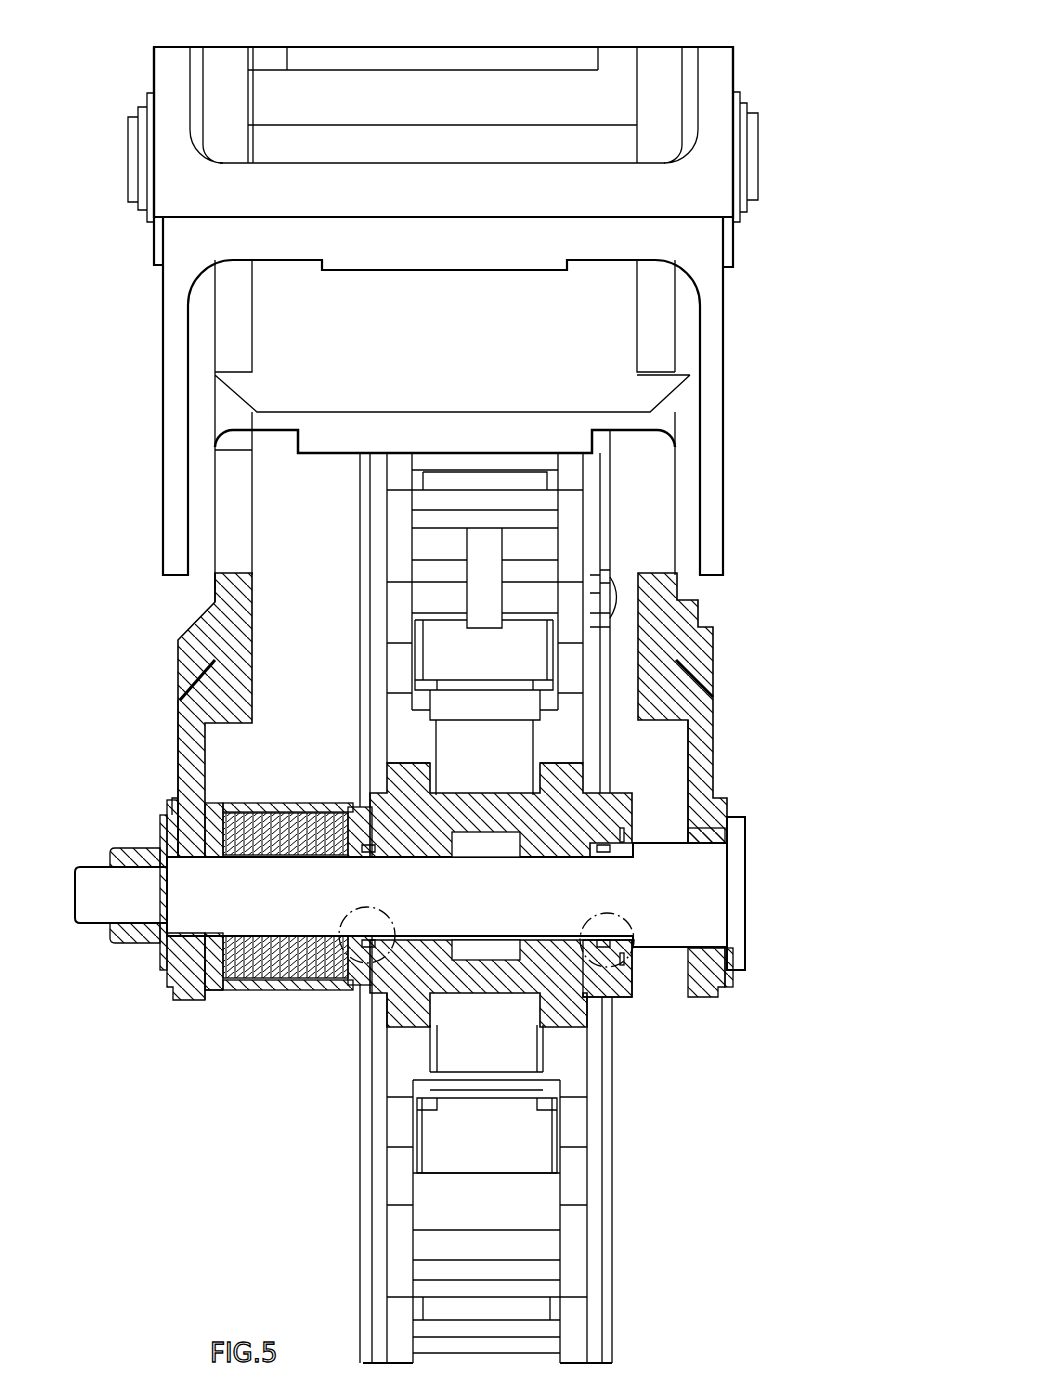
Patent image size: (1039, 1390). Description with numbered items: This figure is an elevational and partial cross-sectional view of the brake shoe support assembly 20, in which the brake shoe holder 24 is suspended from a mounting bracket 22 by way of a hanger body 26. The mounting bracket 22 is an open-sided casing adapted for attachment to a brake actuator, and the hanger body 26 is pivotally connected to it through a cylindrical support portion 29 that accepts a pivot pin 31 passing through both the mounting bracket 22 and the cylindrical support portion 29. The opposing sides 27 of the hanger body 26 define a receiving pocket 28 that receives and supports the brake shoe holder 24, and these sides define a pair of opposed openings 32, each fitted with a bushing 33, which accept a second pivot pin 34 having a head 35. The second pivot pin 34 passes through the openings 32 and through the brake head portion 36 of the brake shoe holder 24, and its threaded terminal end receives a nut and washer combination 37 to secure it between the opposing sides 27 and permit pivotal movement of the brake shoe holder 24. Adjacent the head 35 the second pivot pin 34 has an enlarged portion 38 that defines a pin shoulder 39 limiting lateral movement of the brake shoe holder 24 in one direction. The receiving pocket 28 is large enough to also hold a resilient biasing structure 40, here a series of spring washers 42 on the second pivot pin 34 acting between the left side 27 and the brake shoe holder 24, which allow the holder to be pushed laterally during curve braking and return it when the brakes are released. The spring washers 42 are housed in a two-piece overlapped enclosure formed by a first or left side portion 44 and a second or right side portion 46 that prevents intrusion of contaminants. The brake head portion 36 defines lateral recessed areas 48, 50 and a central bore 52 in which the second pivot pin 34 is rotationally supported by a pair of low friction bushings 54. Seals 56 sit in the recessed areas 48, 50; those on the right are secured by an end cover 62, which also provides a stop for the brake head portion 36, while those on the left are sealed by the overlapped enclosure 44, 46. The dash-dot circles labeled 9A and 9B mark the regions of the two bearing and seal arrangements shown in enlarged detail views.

The brake shoe support assembly 20 is at (90, 127).
The mounting bracket 22 is at (735, 90).
The brake shoe holder 24 is at (612, 1245).
The hanger body 26 is at (713, 670).
The opposing sides 27 is at (187, 760).
The receiving pocket 28 is at (690, 740).
The cylindrical support portion 29 is at (652, 60).
The pivot pin 31 is at (757, 165).
The opposed openings 32 is at (160, 966).
The bushing 33 is at (185, 845).
The second pivot pin 34 is at (745, 895).
The head 35 is at (735, 858).
The brake head portion 36 is at (440, 945).
The nut and washer combination 37 is at (143, 847).
The enlarged portion 38 is at (401, 895).
The pin shoulder 39 is at (630, 848).
The resilient biasing structure 40 is at (220, 1043).
The spring washers 42 is at (260, 983).
The first or left side portion 44 is at (230, 803).
The second or right side portion 46 is at (315, 805).
The lateral recessed area 48 is at (605, 993).
The lateral recessed area 50 is at (367, 973).
The central bore 52 is at (567, 990).
The low friction bushings 54 is at (535, 955).
The seals 56 is at (362, 810).
The end cover 62 is at (623, 955).
The detail view 9A is at (340, 912).
The detail view 9B is at (597, 912).